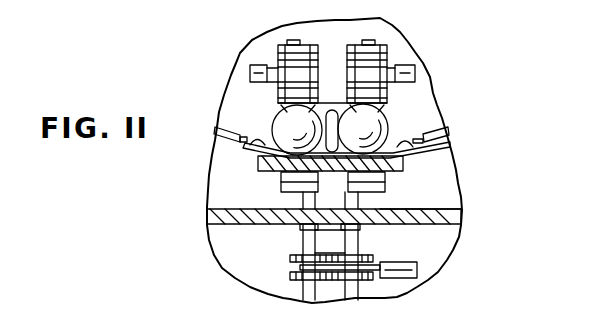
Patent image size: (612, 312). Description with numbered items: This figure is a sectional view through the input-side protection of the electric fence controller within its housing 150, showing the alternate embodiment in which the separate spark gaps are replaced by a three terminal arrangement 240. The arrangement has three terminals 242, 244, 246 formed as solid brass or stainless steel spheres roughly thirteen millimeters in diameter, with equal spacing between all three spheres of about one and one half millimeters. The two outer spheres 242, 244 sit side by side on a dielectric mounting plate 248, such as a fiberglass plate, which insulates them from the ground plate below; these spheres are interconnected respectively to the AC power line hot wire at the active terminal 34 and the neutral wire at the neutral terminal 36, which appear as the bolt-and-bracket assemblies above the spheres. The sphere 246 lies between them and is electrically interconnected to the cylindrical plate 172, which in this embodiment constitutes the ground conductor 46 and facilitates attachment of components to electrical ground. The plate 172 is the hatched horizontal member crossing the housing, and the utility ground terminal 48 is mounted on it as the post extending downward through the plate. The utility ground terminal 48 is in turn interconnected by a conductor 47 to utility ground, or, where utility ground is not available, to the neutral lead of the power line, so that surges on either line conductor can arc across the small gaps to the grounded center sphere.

The housing 150 is at (448, 73).
The neutral terminal 36 is at (294, 40).
The active terminal 34 is at (374, 40).
The sphere 246 is at (332, 108).
The terminal 242 is at (282, 121).
The terminal 244 is at (382, 121).
The three terminal arrangement 240 is at (233, 155).
The dielectric mounting plate 248 is at (403, 168).
The cylindrical plate 172 is at (210, 212).
The conductor 46 is at (442, 202).
The utility ground terminal 48 is at (308, 242).
The conductor 47 is at (416, 269).